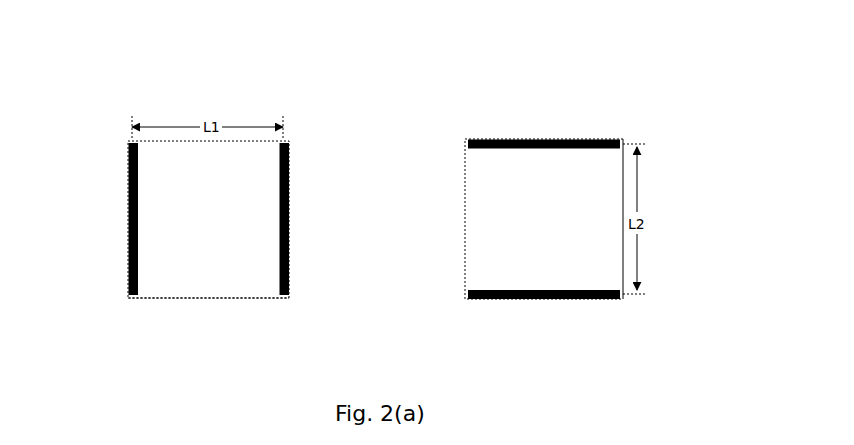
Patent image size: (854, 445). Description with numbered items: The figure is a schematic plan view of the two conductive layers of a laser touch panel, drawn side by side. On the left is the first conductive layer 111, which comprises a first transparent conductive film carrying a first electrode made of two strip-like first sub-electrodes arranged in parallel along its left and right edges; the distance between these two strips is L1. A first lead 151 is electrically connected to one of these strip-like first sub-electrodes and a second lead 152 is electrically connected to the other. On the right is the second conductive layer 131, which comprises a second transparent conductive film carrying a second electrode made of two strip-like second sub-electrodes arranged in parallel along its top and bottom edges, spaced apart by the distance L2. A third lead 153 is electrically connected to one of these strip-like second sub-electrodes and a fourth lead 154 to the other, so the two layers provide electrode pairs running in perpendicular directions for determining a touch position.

The first conductive layer 111 is at (166, 211).
The first lead 151 is at (128, 218).
The second lead 152 is at (289, 218).
The second conductive layer 131 is at (474, 194).
The third lead 153 is at (543, 139).
The fourth lead 154 is at (543, 299).